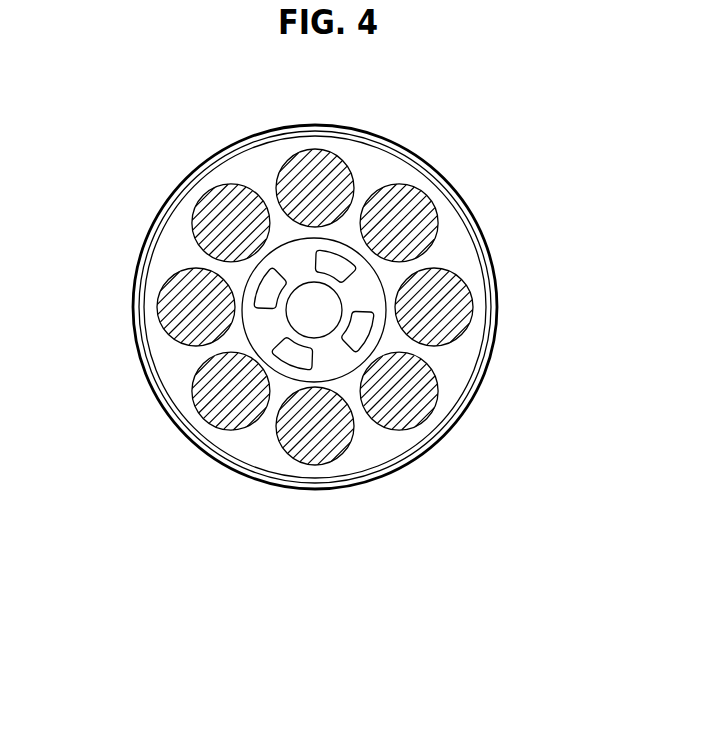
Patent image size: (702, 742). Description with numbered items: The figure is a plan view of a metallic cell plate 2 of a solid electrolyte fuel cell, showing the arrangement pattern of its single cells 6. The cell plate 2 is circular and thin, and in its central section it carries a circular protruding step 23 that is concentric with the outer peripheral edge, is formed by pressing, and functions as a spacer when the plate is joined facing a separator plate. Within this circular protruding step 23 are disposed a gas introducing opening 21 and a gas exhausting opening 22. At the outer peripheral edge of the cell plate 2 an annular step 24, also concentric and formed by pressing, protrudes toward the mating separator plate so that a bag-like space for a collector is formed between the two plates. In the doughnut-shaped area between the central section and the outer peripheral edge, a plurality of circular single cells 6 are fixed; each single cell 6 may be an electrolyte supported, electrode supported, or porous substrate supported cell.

The cell plate 2 is at (405, 153).
The single cells 6 is at (413, 415).
The gas introducing opening 21 is at (315, 283).
The gas exhausting opening 22 is at (268, 296).
The circular protruding step 23 is at (246, 325).
The annular step 24 is at (388, 463).